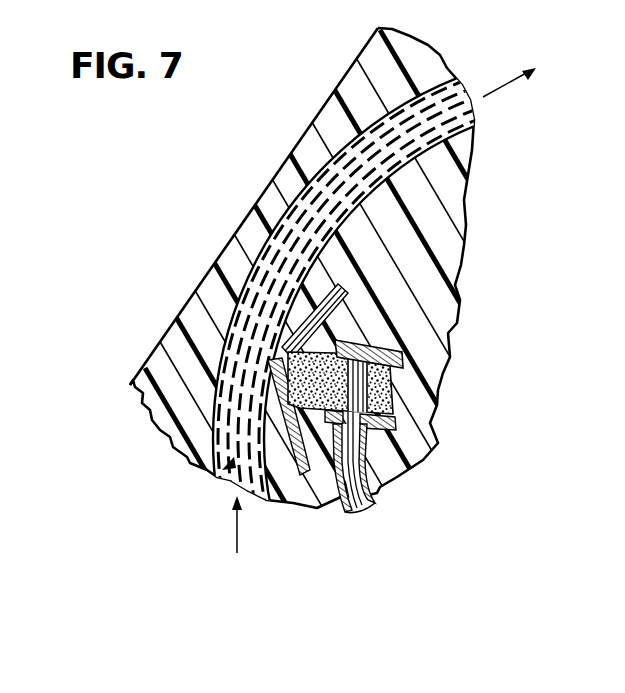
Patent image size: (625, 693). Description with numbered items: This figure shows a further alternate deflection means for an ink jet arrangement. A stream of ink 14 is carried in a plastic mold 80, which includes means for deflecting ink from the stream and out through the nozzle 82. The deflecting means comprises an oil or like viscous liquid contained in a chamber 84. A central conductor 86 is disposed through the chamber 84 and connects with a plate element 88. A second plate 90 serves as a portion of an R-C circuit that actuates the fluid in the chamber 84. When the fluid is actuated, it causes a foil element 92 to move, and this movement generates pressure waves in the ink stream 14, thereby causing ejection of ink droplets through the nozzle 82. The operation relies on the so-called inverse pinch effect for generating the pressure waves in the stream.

The stream of ink 14 is at (217, 475).
The plastic mold 80 is at (453, 203).
The nozzle 82 is at (232, 217).
The chamber 84 is at (388, 392).
The central conductor 86 is at (378, 495).
The plate element 88 is at (378, 348).
The second plate 90 is at (400, 430).
The foil element 92 is at (345, 289).